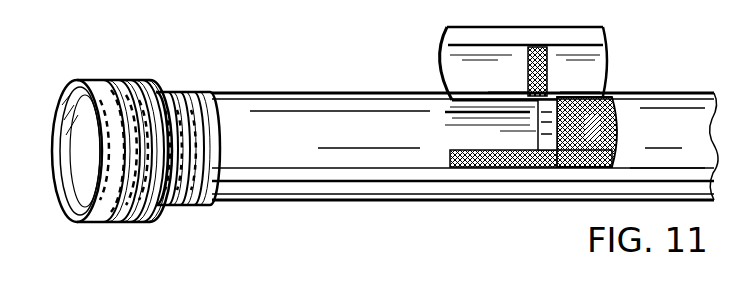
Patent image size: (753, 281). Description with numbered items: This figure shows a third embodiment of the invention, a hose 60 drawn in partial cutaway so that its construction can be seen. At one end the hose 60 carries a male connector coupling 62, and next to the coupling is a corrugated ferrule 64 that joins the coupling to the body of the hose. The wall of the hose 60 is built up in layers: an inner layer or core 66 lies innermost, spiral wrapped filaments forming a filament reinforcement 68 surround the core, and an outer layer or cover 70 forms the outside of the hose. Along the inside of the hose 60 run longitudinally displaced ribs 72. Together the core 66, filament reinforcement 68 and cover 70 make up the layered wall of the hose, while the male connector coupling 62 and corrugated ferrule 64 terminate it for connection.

The hose 60 is at (317, 87).
The male connector coupling 62 is at (101, 222).
The corrugated ferrule 64 is at (198, 92).
The inner layer (core) 66 is at (449, 84).
The spiral wrapped filaments (filament reinforcement) 68 is at (612, 93).
The outer layer (cover) 70 is at (606, 52).
The longitudinally displaced ribs 72 is at (468, 134).